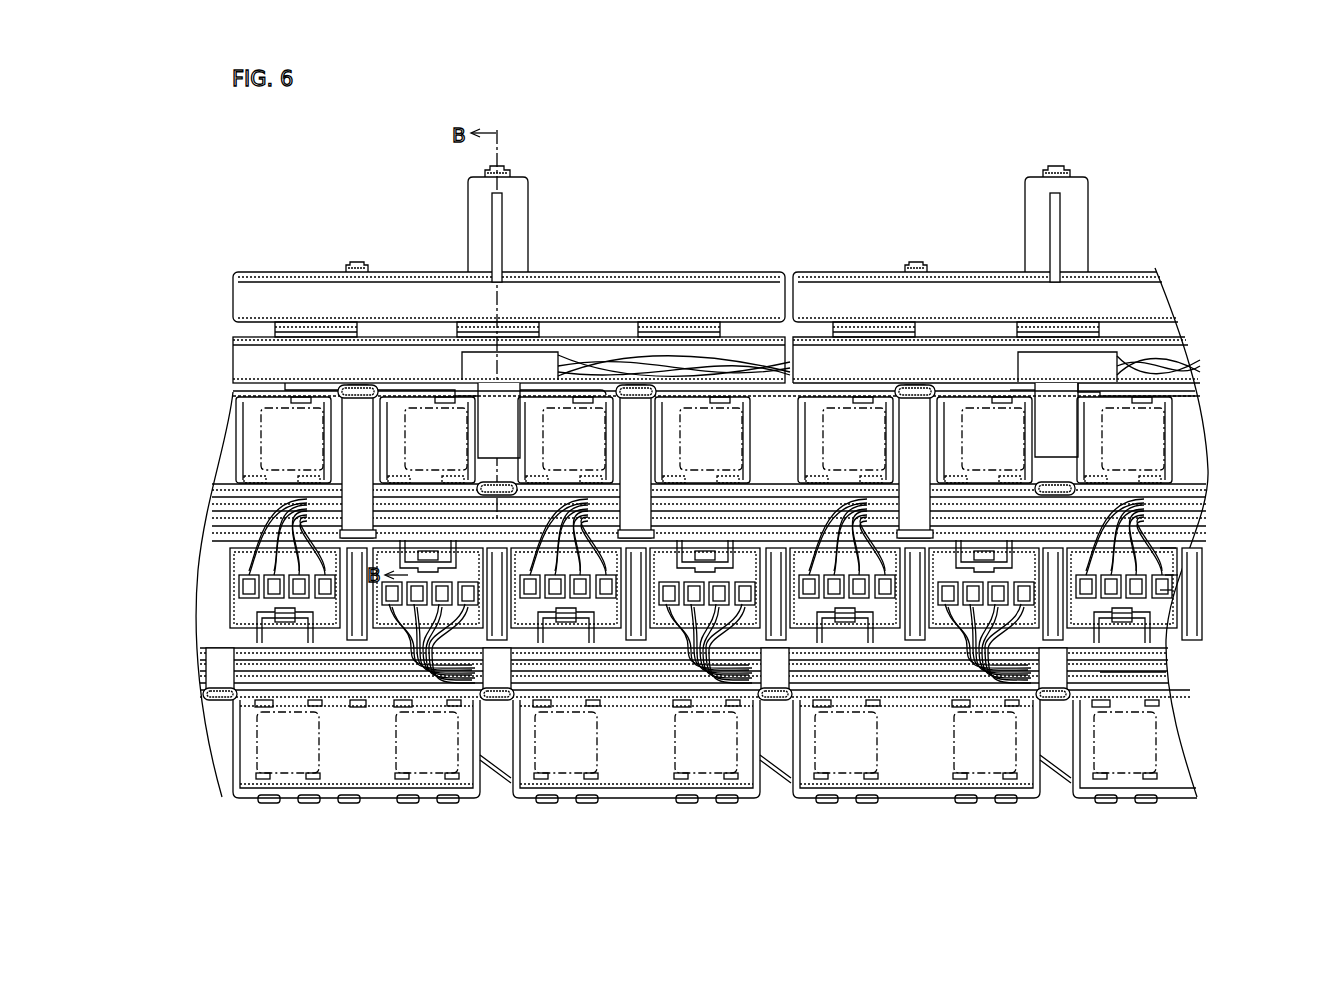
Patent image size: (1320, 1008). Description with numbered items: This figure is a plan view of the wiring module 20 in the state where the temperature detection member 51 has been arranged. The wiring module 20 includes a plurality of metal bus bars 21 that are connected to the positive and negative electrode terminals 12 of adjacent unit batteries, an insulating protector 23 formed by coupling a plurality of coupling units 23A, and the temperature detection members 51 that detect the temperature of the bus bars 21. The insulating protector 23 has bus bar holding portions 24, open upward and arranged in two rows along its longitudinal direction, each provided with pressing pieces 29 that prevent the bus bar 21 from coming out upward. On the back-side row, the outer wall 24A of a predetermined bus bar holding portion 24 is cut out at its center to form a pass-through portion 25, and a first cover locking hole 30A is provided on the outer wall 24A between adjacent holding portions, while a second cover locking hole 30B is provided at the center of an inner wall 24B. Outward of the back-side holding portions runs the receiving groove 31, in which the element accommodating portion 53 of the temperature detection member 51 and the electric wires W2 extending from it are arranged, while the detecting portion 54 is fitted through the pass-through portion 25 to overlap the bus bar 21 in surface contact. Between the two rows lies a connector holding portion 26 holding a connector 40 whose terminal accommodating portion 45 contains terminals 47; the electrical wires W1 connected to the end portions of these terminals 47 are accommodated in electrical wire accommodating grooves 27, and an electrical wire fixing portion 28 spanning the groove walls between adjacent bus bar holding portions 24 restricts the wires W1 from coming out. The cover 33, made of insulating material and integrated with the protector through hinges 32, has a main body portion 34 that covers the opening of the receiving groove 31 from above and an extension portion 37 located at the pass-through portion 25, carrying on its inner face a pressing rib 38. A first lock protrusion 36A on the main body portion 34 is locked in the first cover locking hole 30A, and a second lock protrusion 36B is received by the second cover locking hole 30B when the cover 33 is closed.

The electrode terminals 12 is at (1138, 775).
The wiring module 20 is at (1158, 248).
The bus bar 21 is at (368, 765).
The insulating protector 23 is at (830, 840).
The coupling unit 23A is at (721, 798).
The bus bar holding portion 24 is at (245, 417).
The outer wall 24A is at (402, 390).
The inner wall 24B is at (1095, 470).
The pass-through portion 25 is at (487, 372).
The connector holding portion 26 is at (240, 590).
The electrical wire accommodating groove 27 is at (255, 505).
The electrical wire fixing portion 28 is at (355, 492).
The pressing piece 29 is at (357, 703).
The first cover locking hole 30A is at (928, 395).
The second cover locking hole 30B is at (1068, 492).
The receiving groove 31 is at (757, 350).
The hinge 32 is at (1065, 322).
The cover 33 is at (803, 262).
The main body portion 34 is at (855, 290).
The first lock protrusion 36A is at (912, 262).
The second lock protrusion 36B is at (497, 165).
The extension portion 37 is at (518, 200).
The pressing rib 38 is at (502, 238).
The connector 40 is at (1176, 556).
The terminal accommodating portion 45 is at (1170, 590).
The terminal 47 is at (1177, 577).
The temperature detection member 51 is at (543, 350).
The element accommodating portion 53 is at (565, 390).
The detecting portion 54 is at (605, 385).
The electrical wire W1 is at (1165, 672).
The electrical wire W2 is at (712, 372).